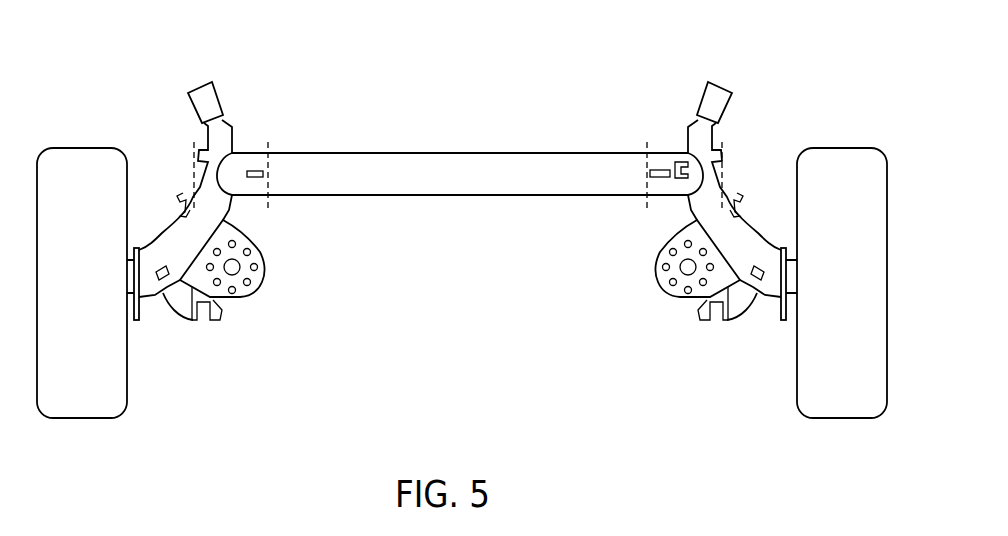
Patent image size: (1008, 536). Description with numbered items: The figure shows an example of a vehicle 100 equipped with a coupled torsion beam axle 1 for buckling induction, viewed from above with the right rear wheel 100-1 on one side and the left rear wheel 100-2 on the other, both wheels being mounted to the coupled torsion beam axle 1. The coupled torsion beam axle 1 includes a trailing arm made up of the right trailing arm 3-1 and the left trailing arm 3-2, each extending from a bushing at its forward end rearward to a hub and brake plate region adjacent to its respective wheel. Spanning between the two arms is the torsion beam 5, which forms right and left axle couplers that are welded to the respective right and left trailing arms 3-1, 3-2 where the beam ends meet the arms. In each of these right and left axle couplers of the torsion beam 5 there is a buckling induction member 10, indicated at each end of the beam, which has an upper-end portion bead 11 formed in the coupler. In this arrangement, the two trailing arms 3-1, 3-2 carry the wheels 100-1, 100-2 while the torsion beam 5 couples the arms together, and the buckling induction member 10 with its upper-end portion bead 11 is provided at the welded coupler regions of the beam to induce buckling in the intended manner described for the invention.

The vehicle 100 is at (443, 29).
The right rear wheel 100-1 is at (842, 173).
The left rear wheel 100-2 is at (78, 177).
The coupled torsion beam axle 1 is at (459, 314).
The torsion beam 5 is at (453, 182).
The right trailing arm 3-1 is at (740, 247).
The left trailing arm 3-2 is at (181, 247).
The buckling induction member 10 is at (260, 150).
The upper-end portion bead 11 is at (255, 170).